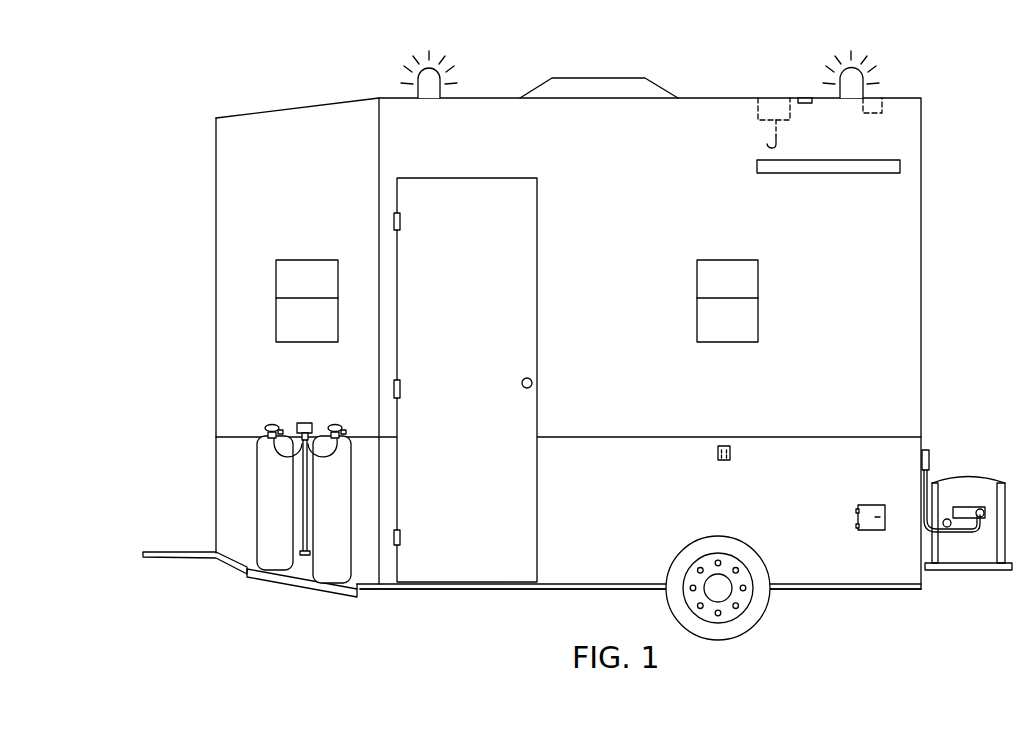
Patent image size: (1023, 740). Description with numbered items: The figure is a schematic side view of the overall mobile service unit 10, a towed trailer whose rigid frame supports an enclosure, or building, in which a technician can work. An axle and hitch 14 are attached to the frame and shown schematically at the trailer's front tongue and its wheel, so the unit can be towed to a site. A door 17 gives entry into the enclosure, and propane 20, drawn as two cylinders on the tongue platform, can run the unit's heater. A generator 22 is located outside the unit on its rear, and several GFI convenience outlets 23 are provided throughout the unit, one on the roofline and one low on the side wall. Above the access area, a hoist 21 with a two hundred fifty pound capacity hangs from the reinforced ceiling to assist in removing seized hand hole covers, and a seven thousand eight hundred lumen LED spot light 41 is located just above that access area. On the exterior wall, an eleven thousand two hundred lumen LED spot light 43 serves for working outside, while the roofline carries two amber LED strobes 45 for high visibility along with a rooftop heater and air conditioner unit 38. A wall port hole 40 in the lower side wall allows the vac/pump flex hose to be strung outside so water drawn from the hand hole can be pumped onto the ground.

The mobile service unit 10 is at (880, 590).
The axle and hitch 14 is at (170, 557).
The door 17 is at (473, 300).
The propane 20 is at (270, 563).
The hoist 21 is at (768, 102).
The generator 22 is at (968, 477).
The GFI convenience outlets 23 is at (803, 98).
The rooftop heater/air conditioner unit 38 is at (591, 78).
The wall port hole 40 is at (870, 505).
The LED spot light 41 is at (882, 110).
The exterior LED spot light 43 is at (850, 175).
The amber LED strobes 45 is at (437, 72).